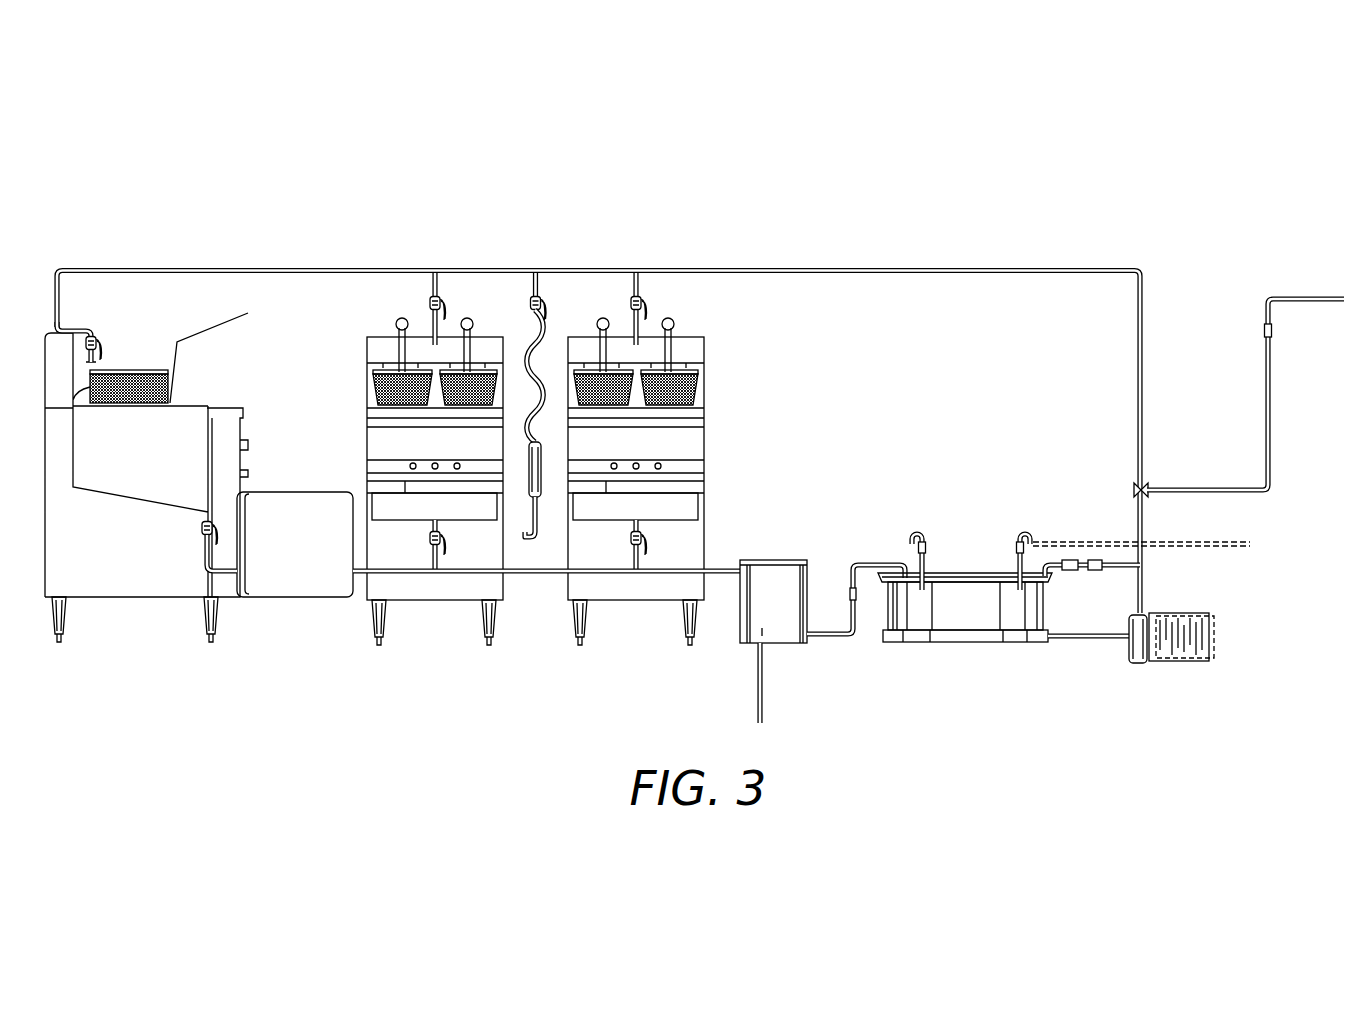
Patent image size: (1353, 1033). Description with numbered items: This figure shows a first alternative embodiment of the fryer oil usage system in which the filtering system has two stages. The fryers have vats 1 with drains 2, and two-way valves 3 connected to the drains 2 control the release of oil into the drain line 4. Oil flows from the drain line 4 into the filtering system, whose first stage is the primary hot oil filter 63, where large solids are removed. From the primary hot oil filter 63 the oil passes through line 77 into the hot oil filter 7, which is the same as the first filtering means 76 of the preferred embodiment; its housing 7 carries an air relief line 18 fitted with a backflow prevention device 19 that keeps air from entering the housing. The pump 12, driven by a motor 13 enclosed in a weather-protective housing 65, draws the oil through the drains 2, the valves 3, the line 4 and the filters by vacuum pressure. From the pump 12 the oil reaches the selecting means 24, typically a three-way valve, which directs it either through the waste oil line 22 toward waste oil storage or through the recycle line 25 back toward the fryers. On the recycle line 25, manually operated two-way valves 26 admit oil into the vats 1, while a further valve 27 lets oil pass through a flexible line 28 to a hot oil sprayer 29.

The vat 1 is at (200, 467).
The drain 2 is at (430, 529).
The two-way valve 3 is at (200, 533).
The line 4 is at (357, 576).
The hot oil filter 7 is at (981, 621).
The pump 12 is at (1135, 660).
The motor 13 is at (1178, 658).
The air relief line 18 is at (1112, 541).
The backflow prevention device 19 is at (1016, 537).
The waste oil line 22 is at (1272, 412).
The selecting means 24 is at (1147, 486).
The recycle line 25 is at (1030, 268).
The valve 26 is at (97, 338).
The valve 27 is at (537, 297).
The flexible line 28 is at (543, 345).
The hot oil sprayer 29 is at (534, 540).
The primary hot oil filter 63 is at (782, 566).
The weather-protective housing 65 is at (1213, 640).
The first filtering means 76 is at (910, 514).
The line 77 is at (850, 652).